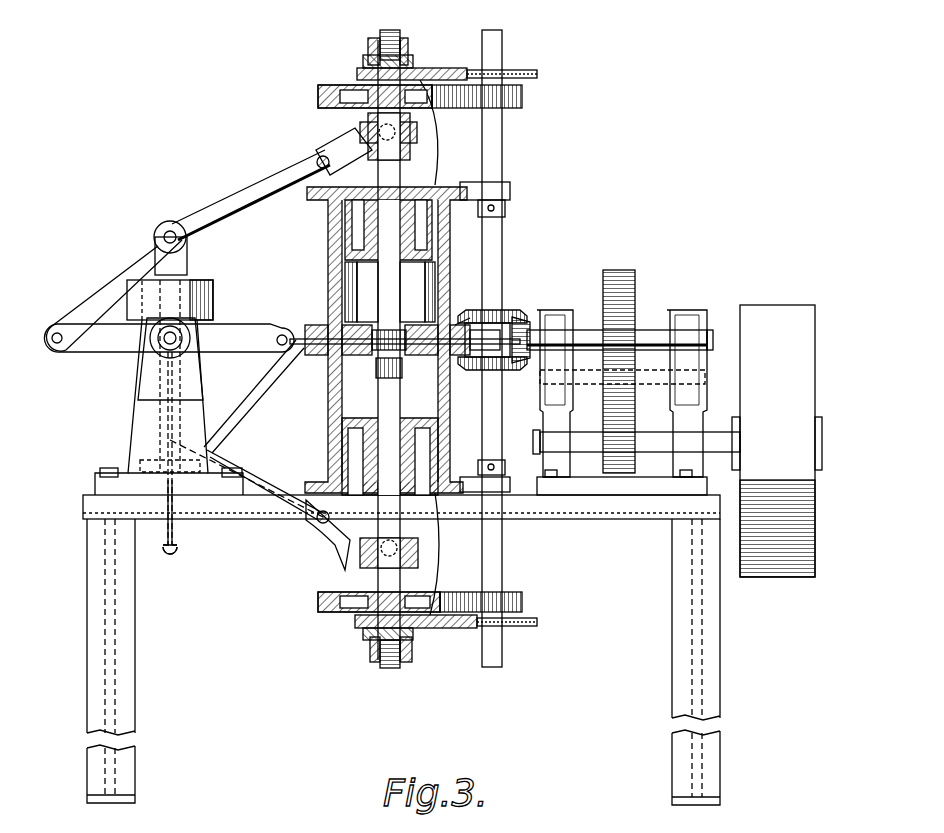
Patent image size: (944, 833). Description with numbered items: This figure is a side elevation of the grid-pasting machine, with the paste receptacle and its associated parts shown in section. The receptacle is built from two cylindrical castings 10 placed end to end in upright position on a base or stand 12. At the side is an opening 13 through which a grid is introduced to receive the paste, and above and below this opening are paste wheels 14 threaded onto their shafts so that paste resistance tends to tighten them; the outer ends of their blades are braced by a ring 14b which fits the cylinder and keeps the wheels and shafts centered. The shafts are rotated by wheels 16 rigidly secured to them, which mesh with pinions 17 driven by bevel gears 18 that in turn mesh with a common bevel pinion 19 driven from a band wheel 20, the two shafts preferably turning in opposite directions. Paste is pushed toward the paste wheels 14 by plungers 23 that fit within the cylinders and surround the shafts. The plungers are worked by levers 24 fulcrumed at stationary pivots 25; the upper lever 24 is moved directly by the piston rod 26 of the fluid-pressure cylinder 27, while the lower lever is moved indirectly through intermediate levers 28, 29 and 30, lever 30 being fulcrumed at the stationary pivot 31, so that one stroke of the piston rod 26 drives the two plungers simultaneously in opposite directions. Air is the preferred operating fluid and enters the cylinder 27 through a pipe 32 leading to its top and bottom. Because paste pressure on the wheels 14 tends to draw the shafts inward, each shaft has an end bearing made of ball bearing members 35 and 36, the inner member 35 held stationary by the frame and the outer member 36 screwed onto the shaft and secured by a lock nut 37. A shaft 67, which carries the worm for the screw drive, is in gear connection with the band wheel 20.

The casting 10 is at (328, 272).
The base or stand 12 is at (255, 508).
The opening 13 is at (318, 330).
The paste wheel 14 is at (405, 345).
The ring 14b is at (450, 345).
The wheel 16 is at (318, 95).
The pinion 17 is at (522, 97).
The bevel gear 18 is at (515, 316).
The bevel pinion 19 is at (530, 318).
The band wheel 20 is at (777, 441).
The plunger 23 is at (410, 200).
The lever 24 is at (262, 170).
The stationary pivot 25 is at (323, 156).
The piston rod 26 is at (187, 255).
The fluid-pressure cylinder 27 is at (185, 330).
The intermediate lever 28 is at (128, 260).
The intermediate lever 29 is at (100, 350).
The intermediate lever 30 is at (240, 392).
The stationary pivot 31 is at (182, 335).
The pipe 32 is at (177, 540).
The ball bearing member 35 is at (413, 61).
The ball bearing member 36 is at (408, 52).
The lock nut 37 is at (400, 40).
The shaft 67 is at (603, 385).